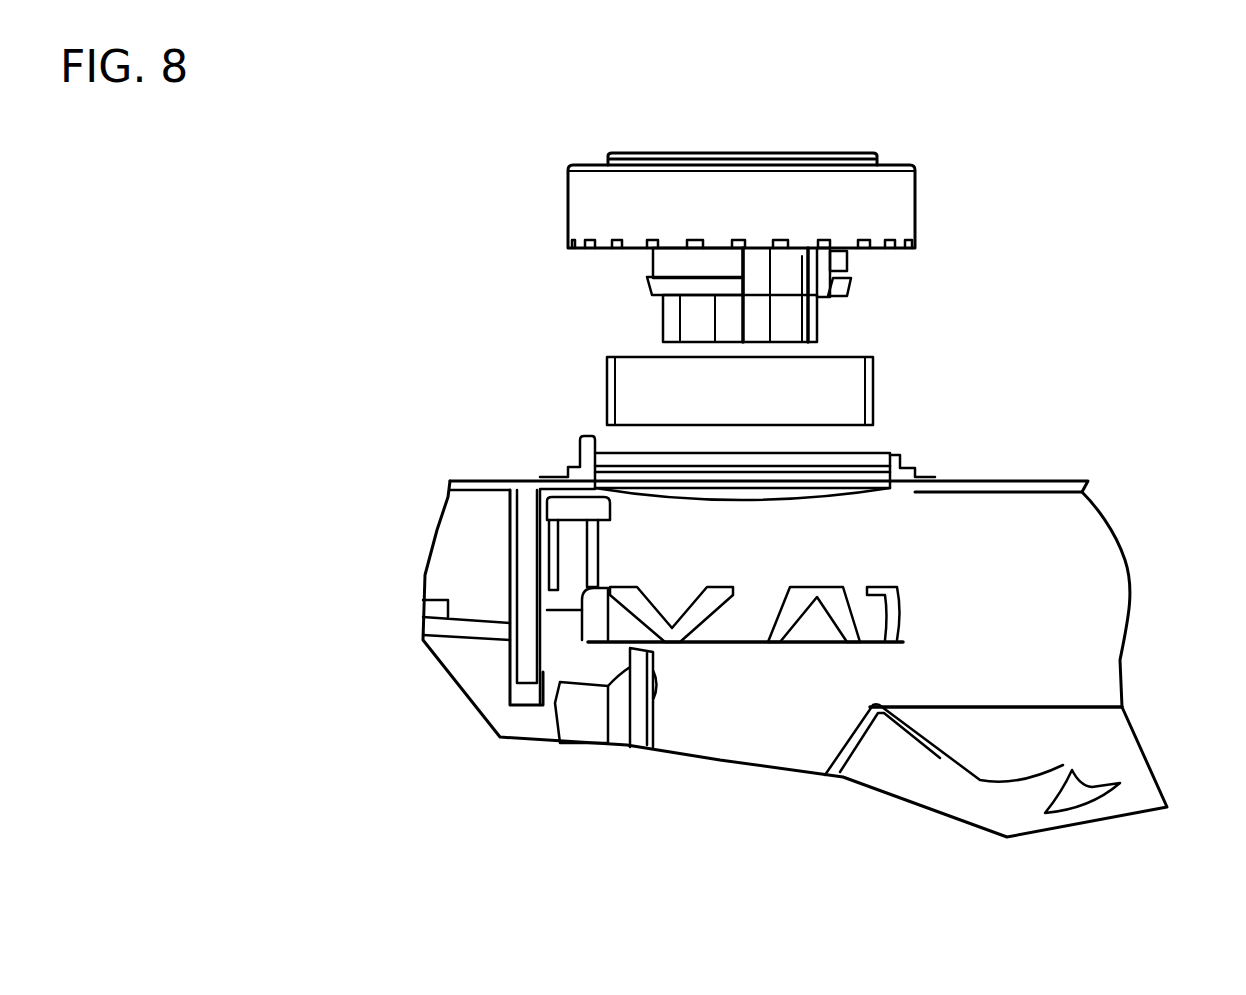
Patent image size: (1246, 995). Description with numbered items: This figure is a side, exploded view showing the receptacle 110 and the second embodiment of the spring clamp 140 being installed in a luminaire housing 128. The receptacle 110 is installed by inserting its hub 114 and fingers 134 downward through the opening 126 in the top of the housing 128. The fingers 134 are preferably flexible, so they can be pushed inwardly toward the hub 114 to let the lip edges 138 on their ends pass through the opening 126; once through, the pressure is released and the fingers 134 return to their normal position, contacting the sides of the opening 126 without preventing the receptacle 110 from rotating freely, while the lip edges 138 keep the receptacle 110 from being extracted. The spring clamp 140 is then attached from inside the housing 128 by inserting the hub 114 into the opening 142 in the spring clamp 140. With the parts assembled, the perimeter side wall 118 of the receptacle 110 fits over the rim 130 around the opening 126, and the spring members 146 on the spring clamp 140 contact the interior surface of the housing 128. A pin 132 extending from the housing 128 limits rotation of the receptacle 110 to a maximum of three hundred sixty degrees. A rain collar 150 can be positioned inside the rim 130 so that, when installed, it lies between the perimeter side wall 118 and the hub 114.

The receptacle 110 is at (607, 153).
The perimeter side wall 118 is at (605, 196).
The fingers 134 is at (660, 262).
The lip edges 138 is at (650, 284).
The hub 114 is at (820, 334).
The rain collar 150 is at (607, 378).
The pin 132 is at (580, 447).
The opening 126 is at (873, 460).
The rim 130 is at (905, 455).
The luminaire housing 128 is at (1020, 478).
The spring members 146 is at (880, 588).
The spring clamp 140 is at (905, 626).
The opening 142 is at (740, 645).